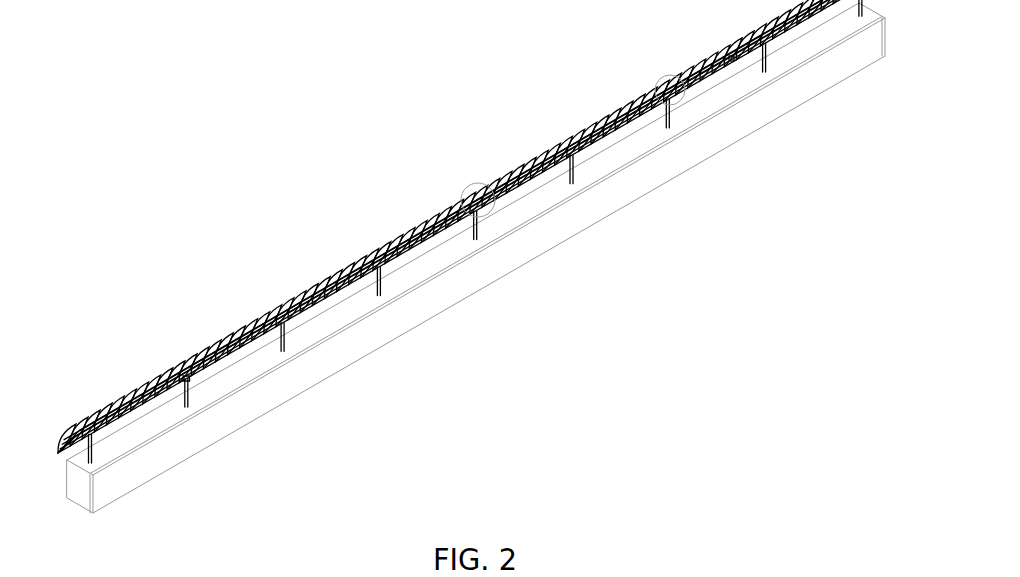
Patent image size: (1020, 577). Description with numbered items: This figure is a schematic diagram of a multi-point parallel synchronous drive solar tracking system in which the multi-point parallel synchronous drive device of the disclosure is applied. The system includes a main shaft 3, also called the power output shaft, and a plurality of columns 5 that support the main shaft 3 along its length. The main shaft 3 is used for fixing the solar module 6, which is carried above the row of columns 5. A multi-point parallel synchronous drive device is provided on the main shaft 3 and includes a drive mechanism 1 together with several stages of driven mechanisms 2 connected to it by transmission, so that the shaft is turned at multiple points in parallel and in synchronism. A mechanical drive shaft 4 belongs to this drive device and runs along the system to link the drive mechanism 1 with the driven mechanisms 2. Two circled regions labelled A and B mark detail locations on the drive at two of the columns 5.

The drive mechanism 1 is at (207, 433).
The driven mechanism 2 is at (457, 226).
The power output shaft/main shaft 3 is at (460, 226).
The mechanical drive shaft 4 is at (460, 222).
The column 5 is at (410, 324).
The solar module 6 is at (759, 110).
The detail A is at (458, 152).
The detail B is at (653, 52).